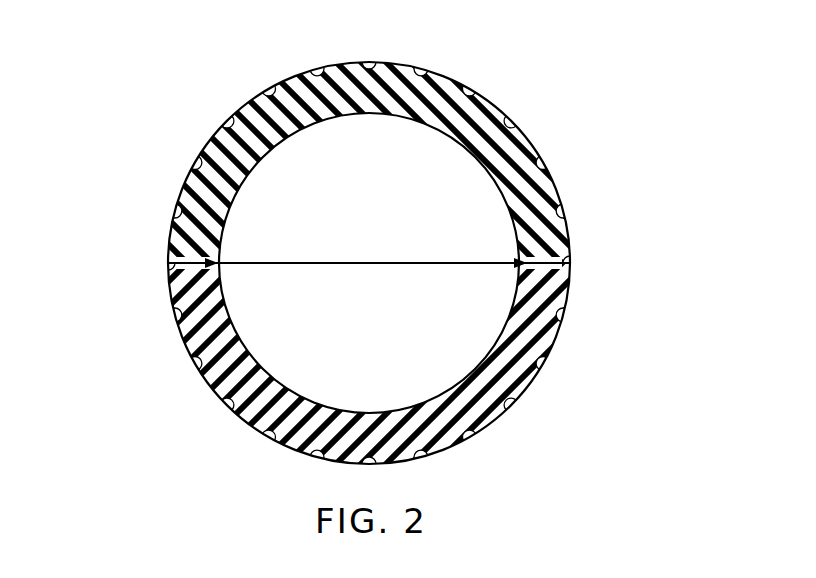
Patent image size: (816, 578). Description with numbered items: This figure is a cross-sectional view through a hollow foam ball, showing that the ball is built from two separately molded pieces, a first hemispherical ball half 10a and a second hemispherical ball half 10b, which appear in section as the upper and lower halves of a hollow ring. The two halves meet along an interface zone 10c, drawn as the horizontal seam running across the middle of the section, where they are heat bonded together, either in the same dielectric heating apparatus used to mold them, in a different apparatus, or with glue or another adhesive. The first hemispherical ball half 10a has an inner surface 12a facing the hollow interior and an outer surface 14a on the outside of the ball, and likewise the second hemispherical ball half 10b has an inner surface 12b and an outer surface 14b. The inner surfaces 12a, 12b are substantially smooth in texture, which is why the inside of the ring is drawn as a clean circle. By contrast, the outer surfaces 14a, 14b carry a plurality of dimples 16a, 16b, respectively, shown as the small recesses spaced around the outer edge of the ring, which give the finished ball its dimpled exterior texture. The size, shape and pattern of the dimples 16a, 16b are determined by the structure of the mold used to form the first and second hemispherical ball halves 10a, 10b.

The first hemispherical ball half 10a is at (227, 148).
The second hemispherical ball half 10b is at (222, 377).
The interface zone 10c is at (550, 250).
The inner surface 12a is at (430, 158).
The inner surface 12b is at (443, 353).
The outer surface 14a is at (530, 140).
The outer surface 14b is at (535, 380).
The dimples 16a is at (228, 122).
The dimples 16b is at (272, 435).